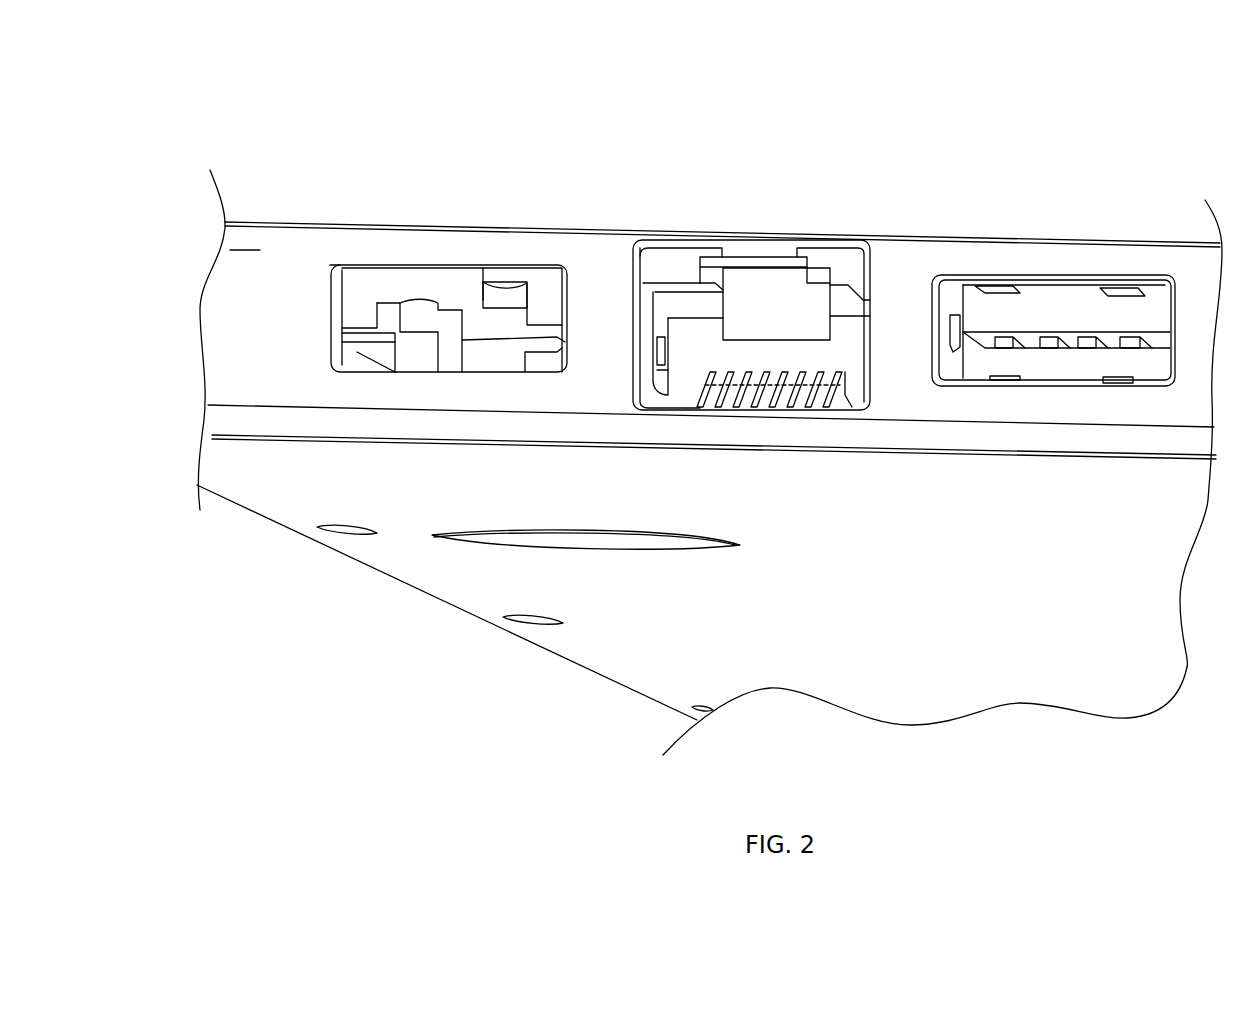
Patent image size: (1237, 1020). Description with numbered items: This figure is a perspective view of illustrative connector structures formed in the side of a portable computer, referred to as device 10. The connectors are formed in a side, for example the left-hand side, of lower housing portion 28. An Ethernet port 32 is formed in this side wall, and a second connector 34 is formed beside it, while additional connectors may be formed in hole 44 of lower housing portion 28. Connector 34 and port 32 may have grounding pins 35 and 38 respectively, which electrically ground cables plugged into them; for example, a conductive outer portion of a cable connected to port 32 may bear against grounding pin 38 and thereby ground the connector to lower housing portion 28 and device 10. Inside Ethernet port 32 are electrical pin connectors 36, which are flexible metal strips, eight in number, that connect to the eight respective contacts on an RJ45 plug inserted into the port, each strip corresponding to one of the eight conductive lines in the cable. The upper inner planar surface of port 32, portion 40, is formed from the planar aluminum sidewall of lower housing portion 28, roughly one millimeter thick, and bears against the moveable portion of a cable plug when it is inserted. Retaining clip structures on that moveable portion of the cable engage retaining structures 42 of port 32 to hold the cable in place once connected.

The device 10 is at (1003, 65).
The lower housing portion 28 is at (254, 243).
The Ethernet port 32 is at (804, 174).
The connector 34 is at (1062, 311).
The grounding pin 35 is at (950, 318).
The electrical pin connectors 36 is at (751, 362).
The grounding pin 38 is at (654, 352).
The portion of port 40 is at (755, 246).
The retaining structures 42 is at (830, 268).
The hole 44 is at (427, 328).